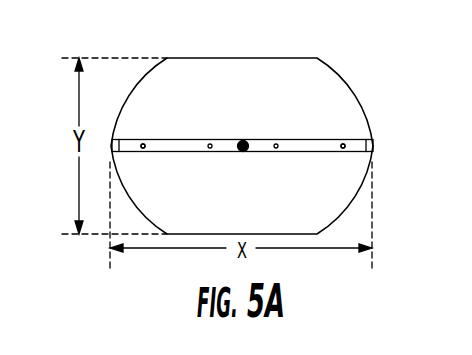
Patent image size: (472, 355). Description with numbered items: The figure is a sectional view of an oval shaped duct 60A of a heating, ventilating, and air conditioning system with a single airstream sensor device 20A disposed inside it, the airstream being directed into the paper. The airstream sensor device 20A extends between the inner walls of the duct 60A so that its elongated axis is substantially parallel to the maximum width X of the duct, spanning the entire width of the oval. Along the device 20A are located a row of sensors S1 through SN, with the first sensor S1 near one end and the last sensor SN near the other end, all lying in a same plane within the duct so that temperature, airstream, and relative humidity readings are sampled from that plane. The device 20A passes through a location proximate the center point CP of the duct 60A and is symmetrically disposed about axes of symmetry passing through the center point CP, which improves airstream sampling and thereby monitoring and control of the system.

The oval shaped duct 60A is at (225, 58).
The airstream sensor device 20A is at (318, 140).
The first sensor S1 is at (143, 153).
The center point CP is at (243, 153).
The Nth sensor SN is at (343, 153).